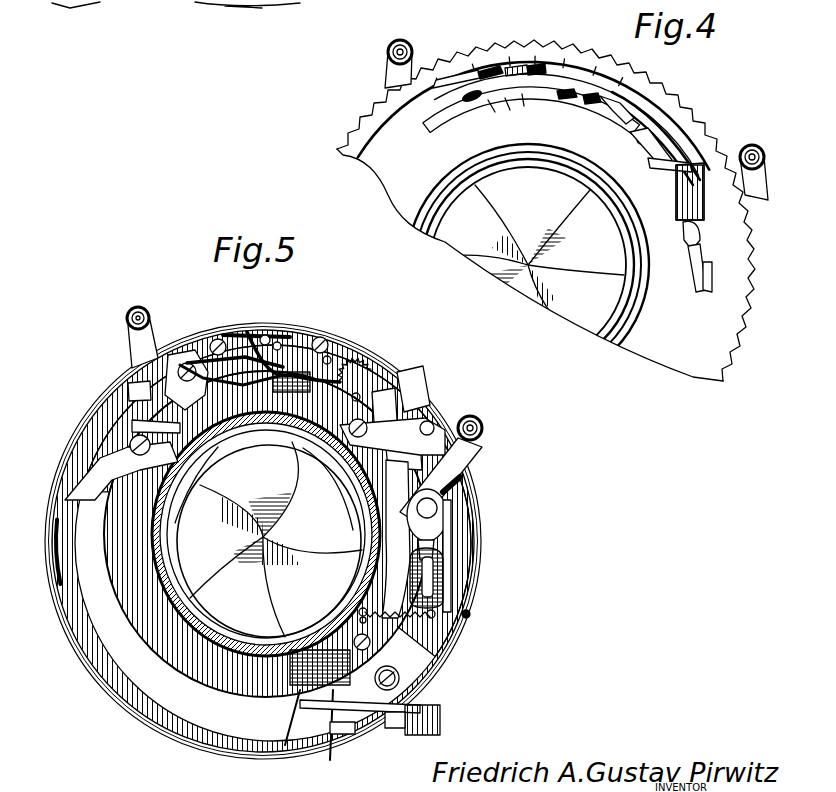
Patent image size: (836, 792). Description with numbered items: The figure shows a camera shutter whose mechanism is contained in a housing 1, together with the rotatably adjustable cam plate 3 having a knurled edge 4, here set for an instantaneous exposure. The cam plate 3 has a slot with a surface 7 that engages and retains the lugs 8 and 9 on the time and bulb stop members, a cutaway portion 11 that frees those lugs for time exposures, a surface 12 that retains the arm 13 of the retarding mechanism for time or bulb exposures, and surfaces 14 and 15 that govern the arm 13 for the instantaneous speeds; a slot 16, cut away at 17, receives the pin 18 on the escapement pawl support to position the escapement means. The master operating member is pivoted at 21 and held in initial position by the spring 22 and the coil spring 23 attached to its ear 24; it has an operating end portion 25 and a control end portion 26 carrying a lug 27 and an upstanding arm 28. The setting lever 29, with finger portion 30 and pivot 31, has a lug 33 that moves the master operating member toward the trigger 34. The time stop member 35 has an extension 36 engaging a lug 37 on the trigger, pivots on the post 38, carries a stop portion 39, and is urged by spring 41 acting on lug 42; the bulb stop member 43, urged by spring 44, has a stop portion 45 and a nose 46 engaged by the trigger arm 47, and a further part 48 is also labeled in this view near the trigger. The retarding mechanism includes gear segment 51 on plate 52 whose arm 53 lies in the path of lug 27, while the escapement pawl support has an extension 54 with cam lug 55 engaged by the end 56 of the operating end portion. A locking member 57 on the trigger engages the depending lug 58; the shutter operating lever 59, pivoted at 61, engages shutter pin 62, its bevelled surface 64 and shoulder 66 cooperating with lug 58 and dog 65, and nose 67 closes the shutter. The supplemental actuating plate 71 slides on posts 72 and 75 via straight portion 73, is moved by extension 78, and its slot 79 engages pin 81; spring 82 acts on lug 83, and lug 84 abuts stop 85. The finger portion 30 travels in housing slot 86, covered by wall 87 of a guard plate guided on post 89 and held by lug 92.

In FIG. 5, the housing 1 is at (78, 657).
In FIG. 4, the cam plate 3 is at (670, 355).
In FIG. 4, the knurled edge 4 is at (735, 350).
In FIG. 4, the surface 7 is at (495, 98).
In FIG. 4, the lug 8 is at (555, 99).
In FIG. 5, the lug 8 is at (328, 345).
In FIG. 4, the lug 9 is at (583, 102).
In FIG. 5, the lug 9 is at (345, 357).
In FIG. 4, the cutaway portion 11 is at (705, 172).
In FIG. 4, the surface 12 is at (712, 275).
In FIG. 4, the arm 13 is at (641, 142).
In FIG. 5, the arm 13 is at (406, 372).
In FIG. 4, the surface 14 is at (677, 200).
In FIG. 4, the surface 15 is at (655, 162).
In FIG. 4, the slot 16 is at (456, 92).
In FIG. 4, the cutaway 17 is at (610, 92).
In FIG. 4, the pin 18 is at (540, 65).
In FIG. 5, the pin 18 is at (283, 336).
In FIG. 5, the pivot 21 is at (410, 699).
In FIG. 5, the spring 22 is at (400, 676).
In FIG. 5, the coil spring 23 is at (435, 641).
In FIG. 5, the ear 24 is at (470, 613).
In FIG. 5, the operating end portion 25 is at (92, 612).
In FIG. 5, the control end portion 26 is at (447, 525).
In FIG. 5, the lug 27 is at (362, 488).
In FIG. 5, the upstanding arm 28 is at (362, 522).
In FIG. 4, the setting lever 29 is at (689, 232).
In FIG. 5, the setting lever 29 is at (440, 508).
In FIG. 4, the operating finger portion 30 is at (752, 192).
In FIG. 5, the operating finger portion 30 is at (480, 471).
In FIG. 4, the pivot 31 is at (693, 247).
In FIG. 5, the pivot 31 is at (375, 548).
In FIG. 5, the lug 33 is at (356, 538).
In FIG. 4, the trigger 34 is at (396, 73).
In FIG. 5, the trigger 34 is at (137, 343).
In FIG. 5, the time stop member 35 is at (251, 430).
In FIG. 5, the extension 36 is at (130, 388).
In FIG. 5, the lug 37 is at (137, 360).
In FIG. 5, the post 38 is at (350, 453).
In FIG. 5, the stop portion 39 is at (440, 446).
In FIG. 5, the spring 41 is at (222, 340).
In FIG. 5, the lug 42 is at (305, 342).
In FIG. 5, the bulb stop member 43 is at (293, 430).
In FIG. 5, the spring 44 is at (248, 333).
In FIG. 5, the stop portion 45 is at (402, 448).
In FIG. 5, the nose 46 is at (226, 430).
In FIG. 5, the arm 47 is at (195, 348).
In FIG. 5, the pin 48 is at (183, 353).
In FIG. 5, the gear segment 51 is at (384, 390).
In FIG. 5, the plate 52 is at (412, 388).
In FIG. 5, the arm 53 is at (402, 445).
In FIG. 5, the extension 54 is at (267, 432).
In FIG. 5, the cam lug 55 is at (192, 476).
In FIG. 5, the end 56 is at (150, 548).
In FIG. 5, the locking member 57 is at (150, 412).
In FIG. 5, the depending lug 58 is at (110, 452).
In FIG. 5, the shutter operating lever 59 is at (90, 468).
In FIG. 5, the pivot 61 is at (155, 526).
In FIG. 5, the shutter member or pin 62 is at (160, 506).
In FIG. 5, the bevelled surface 64 is at (66, 505).
In FIG. 5, the dog 65 is at (76, 487).
In FIG. 5, the shoulder 66 is at (112, 435).
In FIG. 5, the nose 67 is at (168, 482).
In FIG. 5, the actuating plate 71 is at (338, 655).
In FIG. 5, the post 72 is at (437, 600).
In FIG. 5, the straight elongated portion 73 is at (440, 573).
In FIG. 5, the post 75 is at (300, 690).
In FIG. 5, the extension 78 is at (397, 724).
In FIG. 5, the slot 79 is at (275, 655).
In FIG. 5, the second shutter member or pin 81 is at (310, 648).
In FIG. 5, the spring 82 is at (362, 568).
In FIG. 5, the lug 83 is at (445, 549).
In FIG. 5, the lug 84 is at (347, 734).
In FIG. 5, the stop 85 is at (327, 730).
In FIG. 5, the slot 86 is at (472, 491).
In FIG. 5, the wall 87 is at (447, 583).
In FIG. 5, the post 89 is at (472, 620).
In FIG. 5, the lug 92 is at (482, 432).